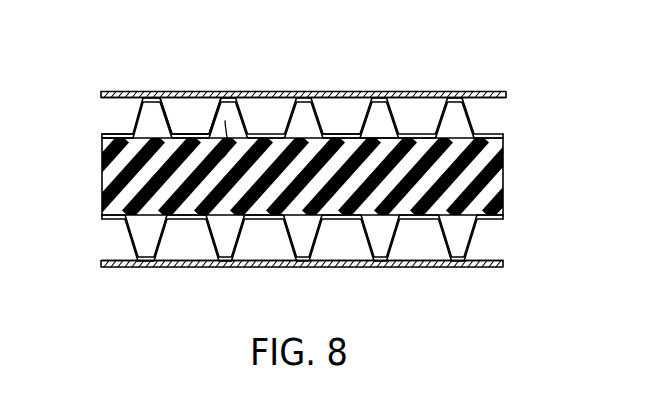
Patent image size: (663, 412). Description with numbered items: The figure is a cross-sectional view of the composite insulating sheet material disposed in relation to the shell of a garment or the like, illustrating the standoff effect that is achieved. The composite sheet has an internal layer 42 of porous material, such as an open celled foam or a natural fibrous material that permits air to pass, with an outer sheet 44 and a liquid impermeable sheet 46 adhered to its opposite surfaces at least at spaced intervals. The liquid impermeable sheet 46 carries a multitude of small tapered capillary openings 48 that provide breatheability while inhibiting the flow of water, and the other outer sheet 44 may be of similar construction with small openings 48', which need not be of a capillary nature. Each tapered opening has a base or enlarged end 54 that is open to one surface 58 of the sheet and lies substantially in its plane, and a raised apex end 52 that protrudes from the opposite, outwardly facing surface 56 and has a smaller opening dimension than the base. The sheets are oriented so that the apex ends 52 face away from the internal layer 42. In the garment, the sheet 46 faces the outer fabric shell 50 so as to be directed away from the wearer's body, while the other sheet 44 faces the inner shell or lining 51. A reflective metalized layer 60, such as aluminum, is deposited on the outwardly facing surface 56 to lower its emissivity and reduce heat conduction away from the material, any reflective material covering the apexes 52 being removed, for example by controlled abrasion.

The internal layer 42 is at (500, 180).
The outer sheet 44 is at (486, 243).
The liquid impermeable sheet 46 is at (483, 117).
The capillary openings 48 is at (304, 71).
The capillary openings 48' is at (311, 281).
The outer fabric shell 50 is at (397, 92).
The inner shell or lining 51 is at (420, 268).
The apex end 52 is at (207, 102).
The base end 54 is at (192, 140).
The outwardly facing surface 56 is at (337, 133).
The surface 58 is at (373, 145).
The reflective metalized layer 60 is at (128, 113).